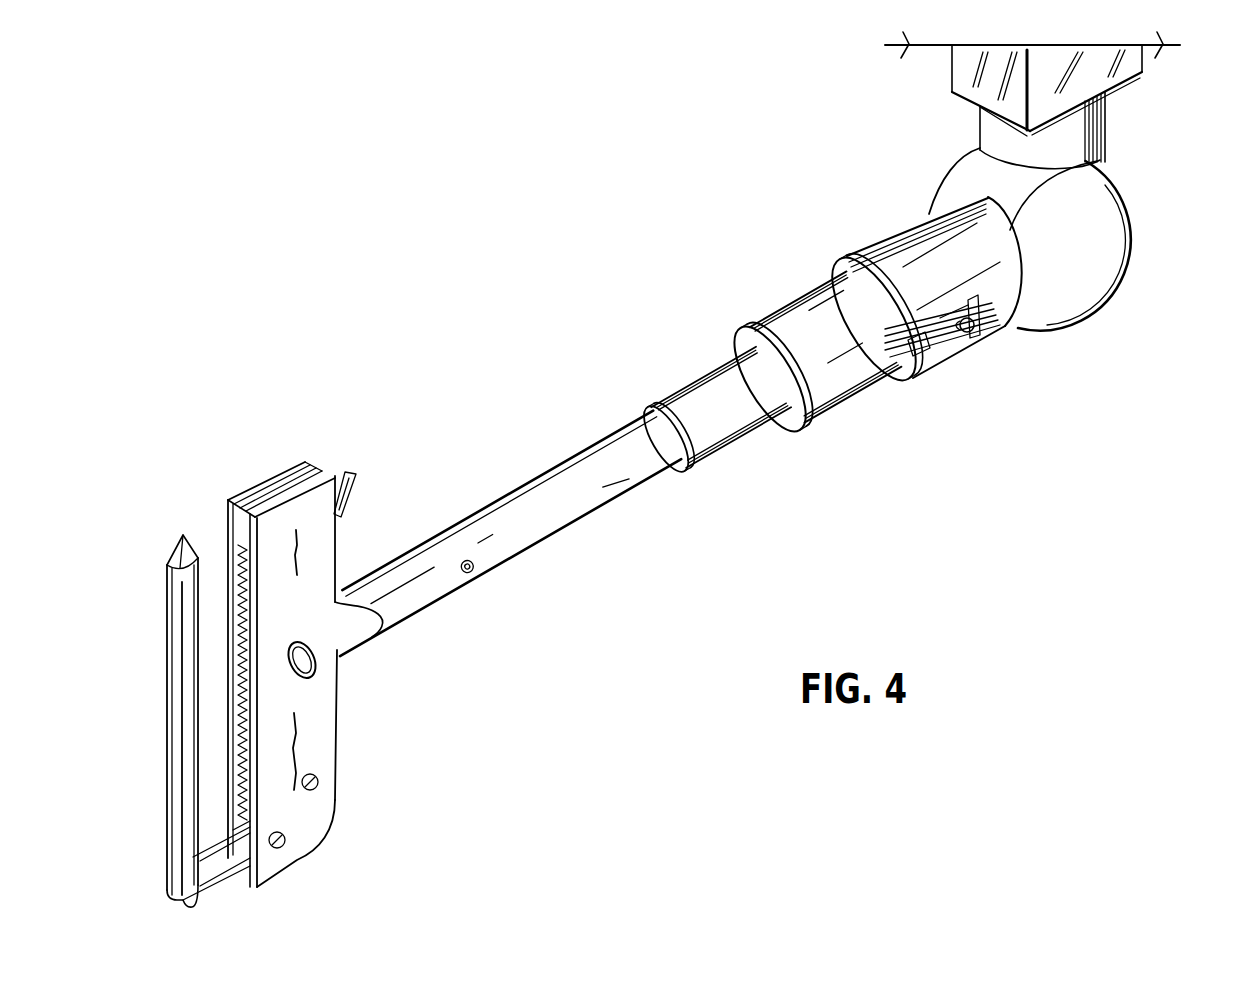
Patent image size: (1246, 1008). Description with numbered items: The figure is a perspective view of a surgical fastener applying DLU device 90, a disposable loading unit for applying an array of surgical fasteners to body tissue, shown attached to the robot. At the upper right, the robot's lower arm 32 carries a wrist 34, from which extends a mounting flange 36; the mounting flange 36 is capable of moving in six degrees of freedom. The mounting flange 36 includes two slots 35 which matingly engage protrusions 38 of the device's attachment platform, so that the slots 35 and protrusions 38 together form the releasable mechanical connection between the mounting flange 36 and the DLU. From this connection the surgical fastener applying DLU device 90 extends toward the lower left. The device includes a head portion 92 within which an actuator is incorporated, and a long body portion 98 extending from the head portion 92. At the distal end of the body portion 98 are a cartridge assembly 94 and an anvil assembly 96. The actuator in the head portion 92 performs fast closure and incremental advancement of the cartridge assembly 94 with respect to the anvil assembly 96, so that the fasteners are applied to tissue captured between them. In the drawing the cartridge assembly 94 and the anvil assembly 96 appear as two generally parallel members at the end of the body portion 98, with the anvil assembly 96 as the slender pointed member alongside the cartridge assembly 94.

The lower arm 32 is at (1130, 67).
The wrist 34 is at (1087, 197).
The slots 35 is at (955, 347).
The mounting flange 36 is at (893, 250).
The protrusions 38 is at (985, 330).
The surgical fastener applying DLU device 90 is at (610, 352).
The head portion 92 is at (798, 317).
The cartridge assembly 94 is at (323, 530).
The anvil assembly 96 is at (176, 560).
The body portion 98 is at (493, 553).